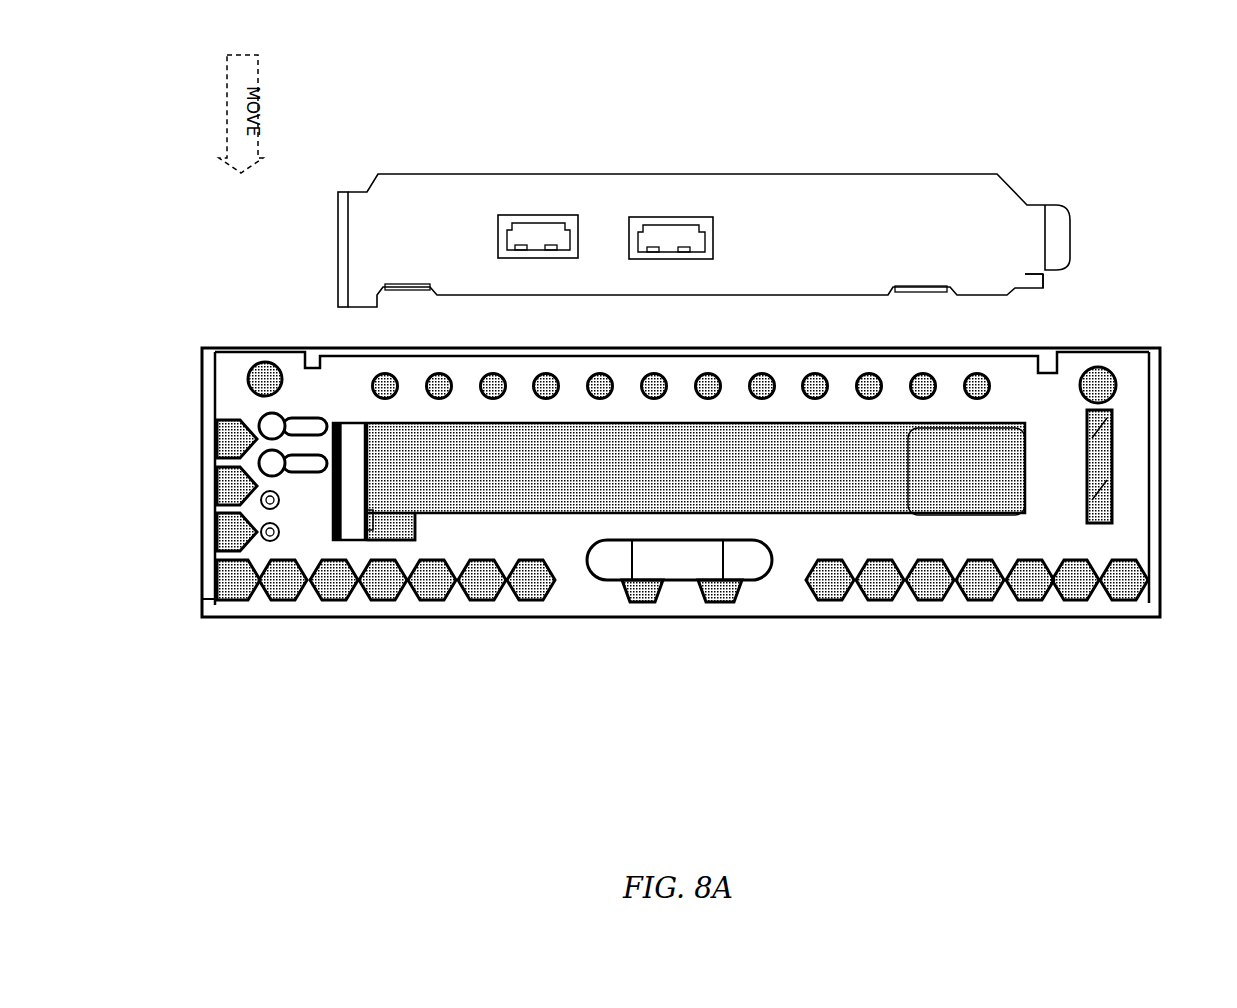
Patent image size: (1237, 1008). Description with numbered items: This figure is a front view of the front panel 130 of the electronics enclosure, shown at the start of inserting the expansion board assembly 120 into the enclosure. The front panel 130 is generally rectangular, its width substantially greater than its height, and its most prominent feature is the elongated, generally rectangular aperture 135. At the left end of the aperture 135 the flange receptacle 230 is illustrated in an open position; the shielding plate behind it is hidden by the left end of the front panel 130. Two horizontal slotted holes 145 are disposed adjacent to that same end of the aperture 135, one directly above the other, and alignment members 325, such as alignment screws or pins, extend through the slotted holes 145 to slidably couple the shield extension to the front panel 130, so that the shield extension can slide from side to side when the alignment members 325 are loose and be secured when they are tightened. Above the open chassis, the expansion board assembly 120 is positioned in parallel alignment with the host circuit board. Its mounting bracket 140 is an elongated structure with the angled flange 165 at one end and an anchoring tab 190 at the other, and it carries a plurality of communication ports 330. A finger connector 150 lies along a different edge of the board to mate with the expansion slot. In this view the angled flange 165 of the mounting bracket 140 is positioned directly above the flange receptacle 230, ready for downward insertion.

The removable module 120 is at (792, 110).
The front panel 130 is at (1083, 620).
The aperture 135 is at (1043, 287).
The mounting bracket 140 is at (855, 178).
The slotted holes 145 is at (315, 427).
The finger connector 150 is at (1110, 460).
The angled flange 165 is at (344, 190).
The anchoring tab 190 is at (1072, 222).
The flange receptacle 230 is at (333, 508).
The alignment members 325 is at (215, 453).
The communication ports 330 is at (540, 215).